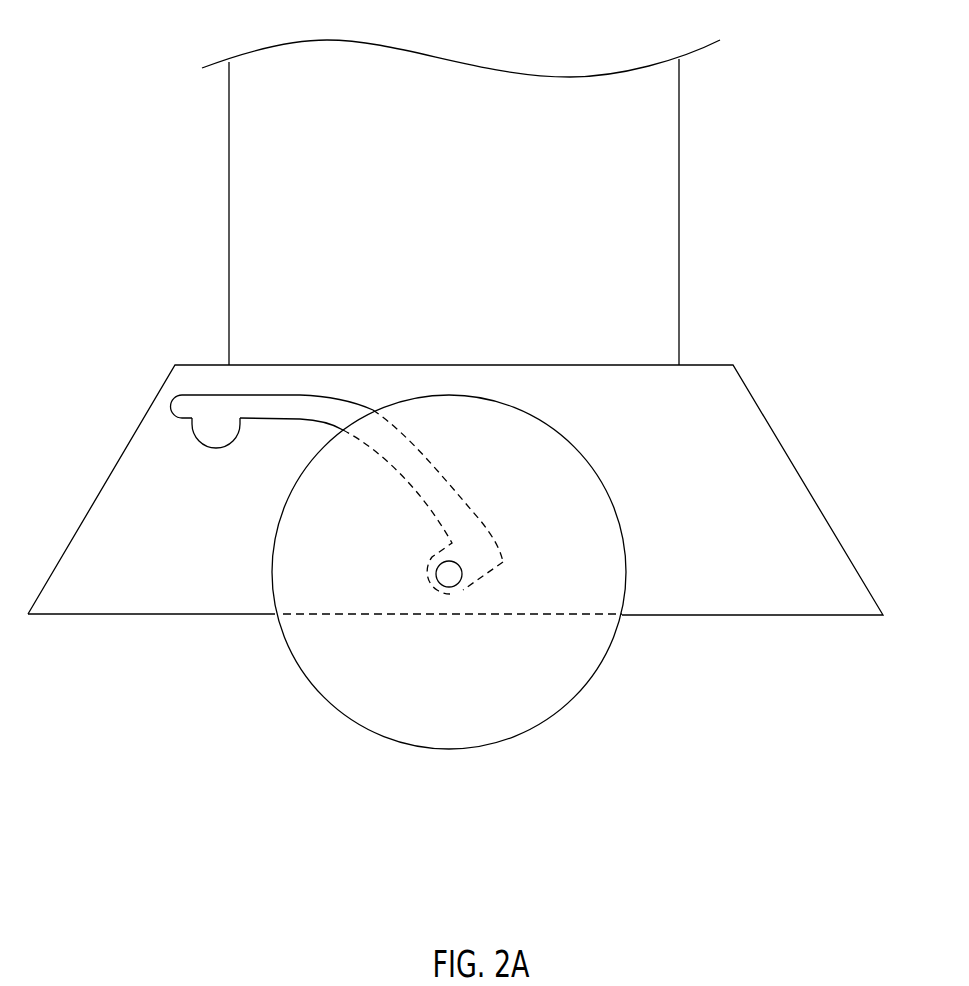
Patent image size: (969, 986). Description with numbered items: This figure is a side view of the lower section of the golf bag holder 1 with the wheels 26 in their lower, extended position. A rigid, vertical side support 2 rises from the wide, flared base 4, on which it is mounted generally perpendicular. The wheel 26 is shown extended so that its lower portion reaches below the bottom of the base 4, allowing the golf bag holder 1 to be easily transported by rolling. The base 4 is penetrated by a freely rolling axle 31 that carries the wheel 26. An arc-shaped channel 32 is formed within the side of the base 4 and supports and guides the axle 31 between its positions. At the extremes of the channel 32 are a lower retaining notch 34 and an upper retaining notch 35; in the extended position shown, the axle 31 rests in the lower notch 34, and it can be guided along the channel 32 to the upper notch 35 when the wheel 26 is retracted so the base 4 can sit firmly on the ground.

The golf bag holder 1 is at (455, 470).
The vertical side support 2 is at (633, 203).
The base 4 is at (751, 463).
The wheel 26 is at (330, 677).
The axle 31 is at (449, 587).
The channel 32 is at (222, 395).
The lower retaining notch 34 is at (463, 590).
The upper retaining notch 35 is at (215, 448).